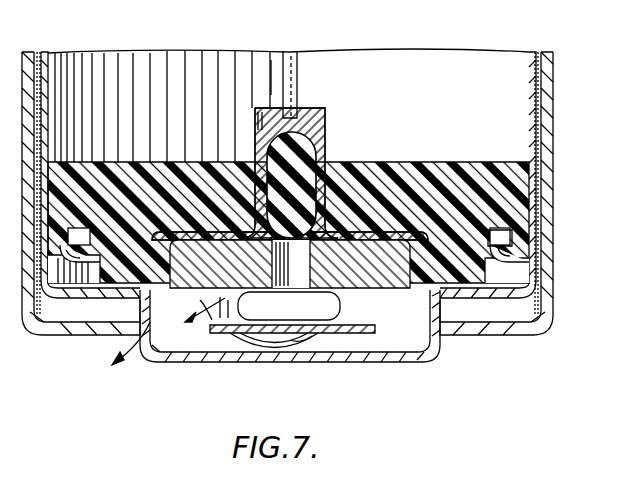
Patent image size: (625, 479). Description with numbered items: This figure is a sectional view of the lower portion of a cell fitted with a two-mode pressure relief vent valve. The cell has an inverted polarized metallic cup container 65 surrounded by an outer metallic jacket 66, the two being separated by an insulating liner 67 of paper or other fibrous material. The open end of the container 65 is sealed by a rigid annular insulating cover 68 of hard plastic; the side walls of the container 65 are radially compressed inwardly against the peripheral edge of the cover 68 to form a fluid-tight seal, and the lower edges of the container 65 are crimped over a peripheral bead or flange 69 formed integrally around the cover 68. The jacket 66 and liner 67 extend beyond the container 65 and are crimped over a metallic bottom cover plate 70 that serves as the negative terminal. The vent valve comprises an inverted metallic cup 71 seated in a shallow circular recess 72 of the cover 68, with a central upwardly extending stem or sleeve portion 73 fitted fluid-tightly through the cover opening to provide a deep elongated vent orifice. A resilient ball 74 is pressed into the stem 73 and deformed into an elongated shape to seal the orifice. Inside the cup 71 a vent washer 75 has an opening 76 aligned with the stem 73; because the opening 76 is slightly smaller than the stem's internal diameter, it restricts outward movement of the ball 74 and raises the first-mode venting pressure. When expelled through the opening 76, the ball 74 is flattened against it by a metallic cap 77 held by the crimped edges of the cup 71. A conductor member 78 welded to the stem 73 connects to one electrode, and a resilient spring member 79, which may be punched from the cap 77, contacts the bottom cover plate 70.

The inverted polarized metallic cup container 65 is at (540, 88).
The outer metallic jacket 66 is at (553, 121).
The insulating liner 67 is at (548, 162).
The annular insulating cover 68 is at (492, 160).
The peripheral bead or flange 69 is at (512, 238).
The metallic bottom cover plate 70 is at (426, 362).
The inverted metallic cup 71 is at (338, 228).
The shallow circular recess 72 is at (370, 228).
The central cylindrical stem or sleeve portion 73 is at (323, 126).
The resilient ball 74 is at (300, 150).
The vent washer 75 is at (346, 282).
The opening 76 is at (293, 276).
The metallic cap 77 is at (226, 332).
The conductor member 78 is at (289, 62).
The resilient spring member 79 is at (298, 348).